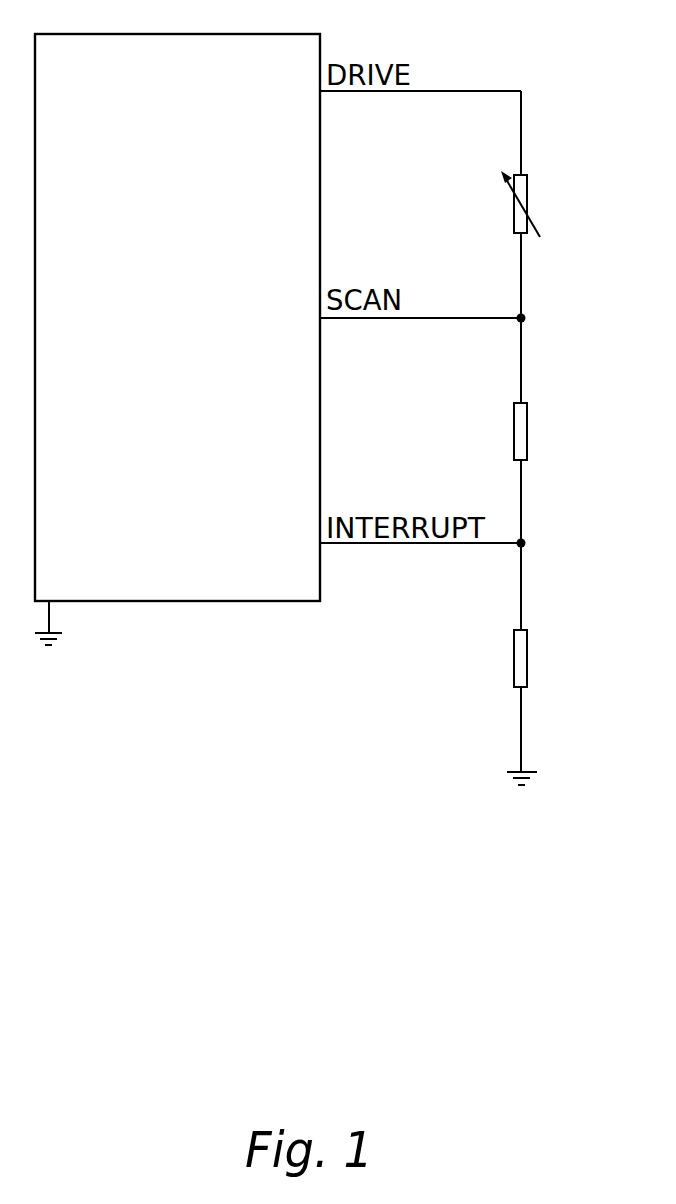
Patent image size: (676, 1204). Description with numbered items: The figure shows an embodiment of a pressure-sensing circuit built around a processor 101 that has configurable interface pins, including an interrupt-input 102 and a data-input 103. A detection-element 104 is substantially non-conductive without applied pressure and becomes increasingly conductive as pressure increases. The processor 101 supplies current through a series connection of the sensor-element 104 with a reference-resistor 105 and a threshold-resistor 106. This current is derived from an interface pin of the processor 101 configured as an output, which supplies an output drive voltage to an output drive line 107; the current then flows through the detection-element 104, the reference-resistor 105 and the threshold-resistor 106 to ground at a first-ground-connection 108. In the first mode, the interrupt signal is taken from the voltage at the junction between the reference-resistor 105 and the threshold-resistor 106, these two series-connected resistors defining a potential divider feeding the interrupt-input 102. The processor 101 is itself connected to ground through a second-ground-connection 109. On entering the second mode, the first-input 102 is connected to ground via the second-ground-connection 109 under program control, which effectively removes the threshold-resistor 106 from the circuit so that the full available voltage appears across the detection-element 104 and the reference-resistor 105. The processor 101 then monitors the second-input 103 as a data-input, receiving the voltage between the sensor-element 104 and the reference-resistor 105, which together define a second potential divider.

The processor 101 is at (202, 330).
The interrupt-input 102 is at (420, 543).
The data-input 103 is at (420, 318).
The detection-element 104 is at (526, 176).
The reference-resistor 105 is at (526, 403).
The threshold-resistor 106 is at (526, 630).
The output drive line 107 is at (420, 91).
The first-ground-connection 108 is at (526, 771).
The second-ground-connection 109 is at (60, 634).